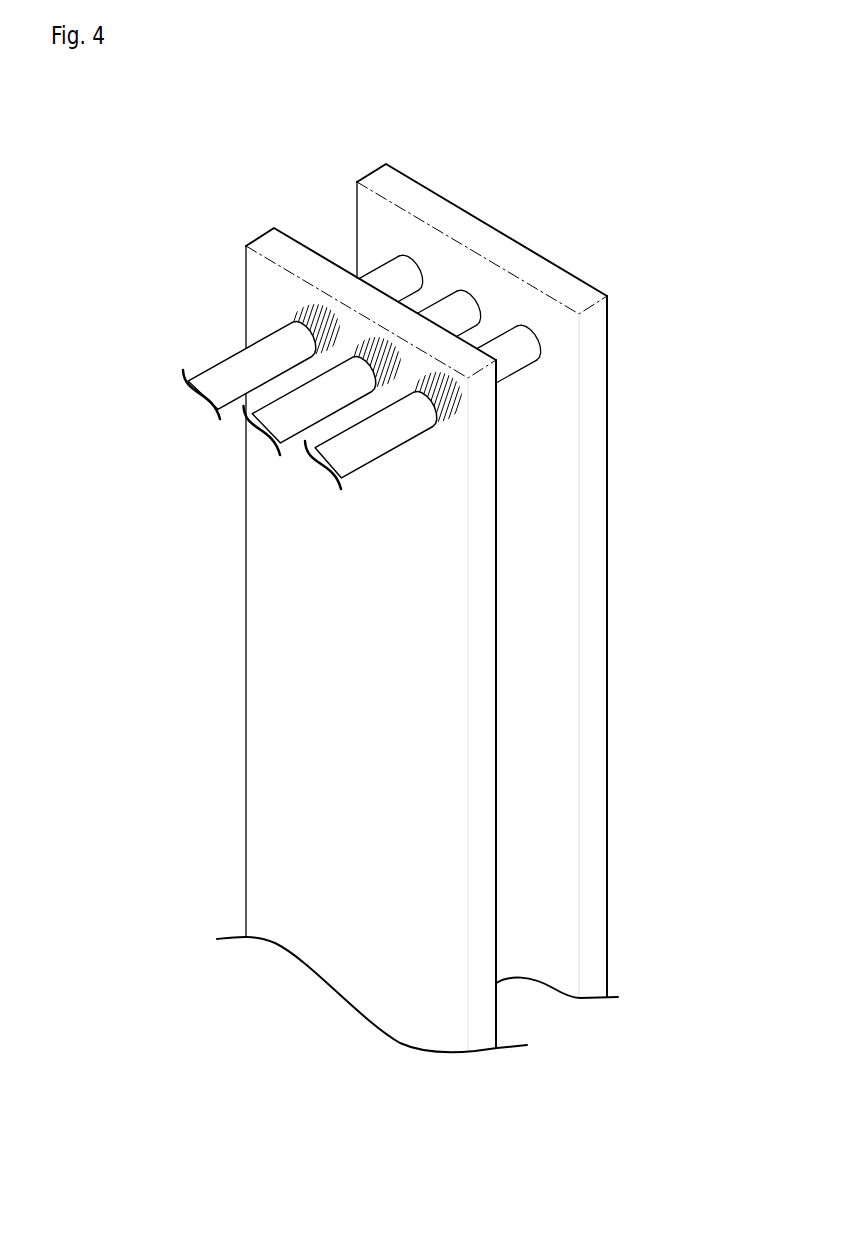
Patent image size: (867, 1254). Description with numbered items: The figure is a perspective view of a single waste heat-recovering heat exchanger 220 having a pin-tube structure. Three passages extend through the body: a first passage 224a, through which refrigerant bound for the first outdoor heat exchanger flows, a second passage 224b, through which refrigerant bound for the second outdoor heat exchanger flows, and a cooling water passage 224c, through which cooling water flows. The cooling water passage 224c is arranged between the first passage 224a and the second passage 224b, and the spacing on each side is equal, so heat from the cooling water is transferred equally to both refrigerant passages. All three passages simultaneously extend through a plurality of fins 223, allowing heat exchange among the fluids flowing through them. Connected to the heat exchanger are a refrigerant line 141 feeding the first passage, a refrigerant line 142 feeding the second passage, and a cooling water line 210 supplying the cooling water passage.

The waste heat-recovering heat exchanger 220 is at (490, 166).
The fins 223 is at (197, 774).
The first passage 224a is at (387, 275).
The second passage 224b is at (518, 358).
The cooling water passage 224c is at (462, 310).
The refrigerant line 141 is at (218, 373).
The refrigerant line 142 is at (350, 460).
The cooling water line 210 is at (280, 418).